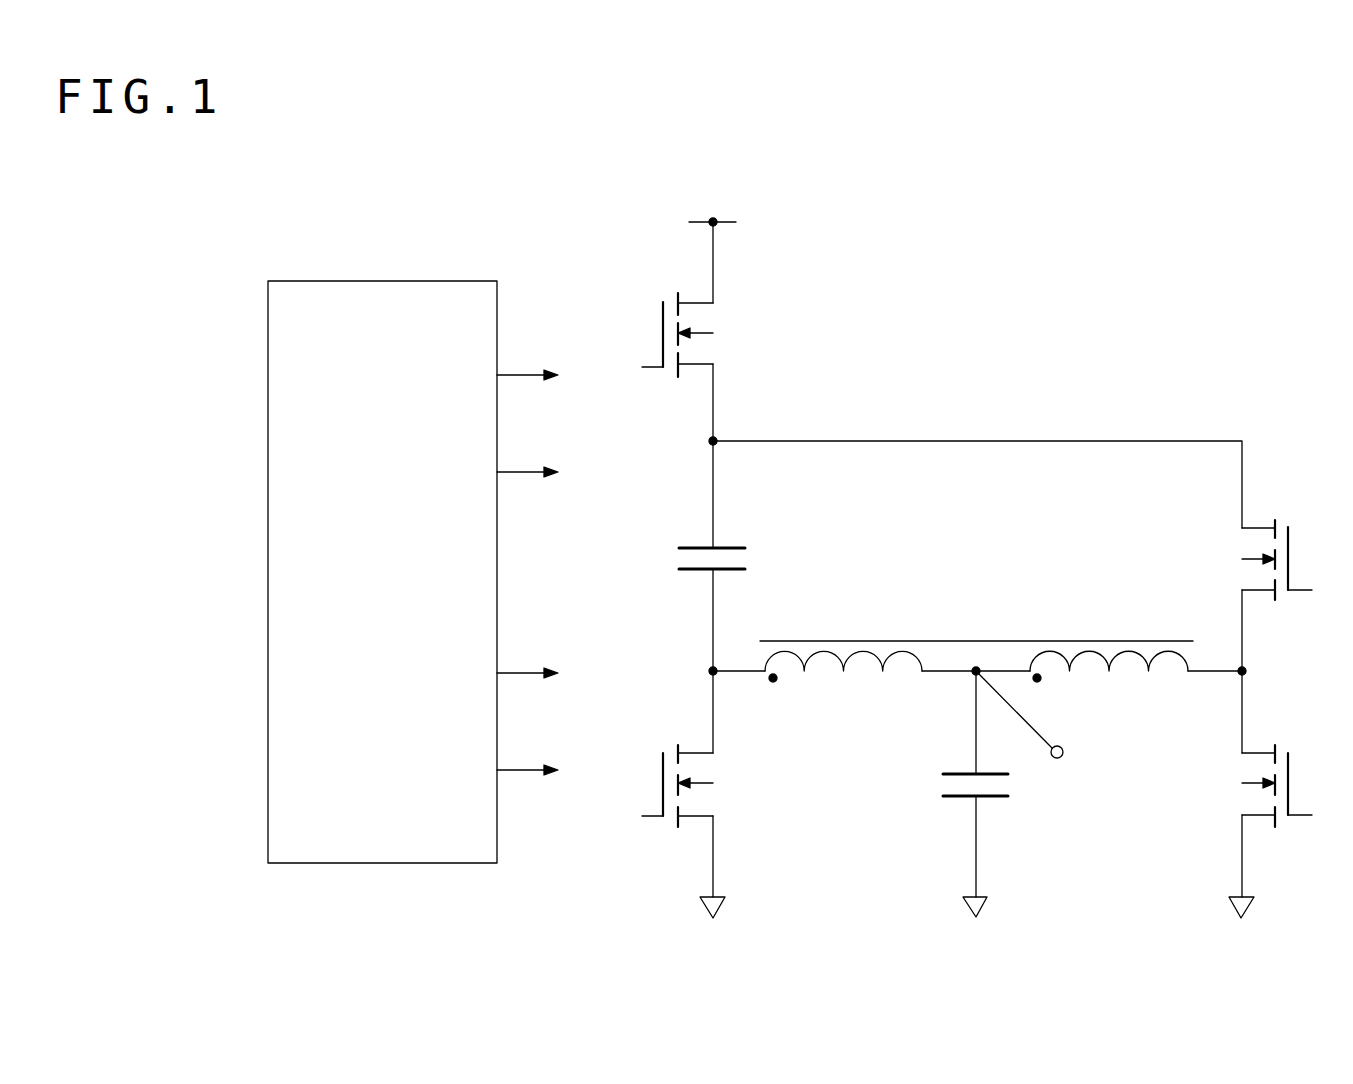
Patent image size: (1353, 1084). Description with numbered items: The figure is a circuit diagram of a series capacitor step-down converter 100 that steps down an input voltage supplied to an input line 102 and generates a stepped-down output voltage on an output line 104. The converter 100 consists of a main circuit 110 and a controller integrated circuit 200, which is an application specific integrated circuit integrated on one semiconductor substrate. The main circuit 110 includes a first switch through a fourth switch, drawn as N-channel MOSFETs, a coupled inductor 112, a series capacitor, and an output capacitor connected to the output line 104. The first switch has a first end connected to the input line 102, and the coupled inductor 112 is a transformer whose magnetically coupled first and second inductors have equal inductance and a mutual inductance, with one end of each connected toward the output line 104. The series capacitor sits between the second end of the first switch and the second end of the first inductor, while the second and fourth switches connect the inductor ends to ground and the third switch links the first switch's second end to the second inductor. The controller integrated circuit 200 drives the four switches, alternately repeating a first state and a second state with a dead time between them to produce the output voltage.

The series capacitor step-down converter 100 is at (1266, 197).
The input line 102 is at (708, 220).
The output line 104 is at (1030, 730).
The main circuit 110 is at (1124, 277).
The coupled inductor 112 is at (1050, 608).
The controller integrated circuit 200 is at (385, 281).